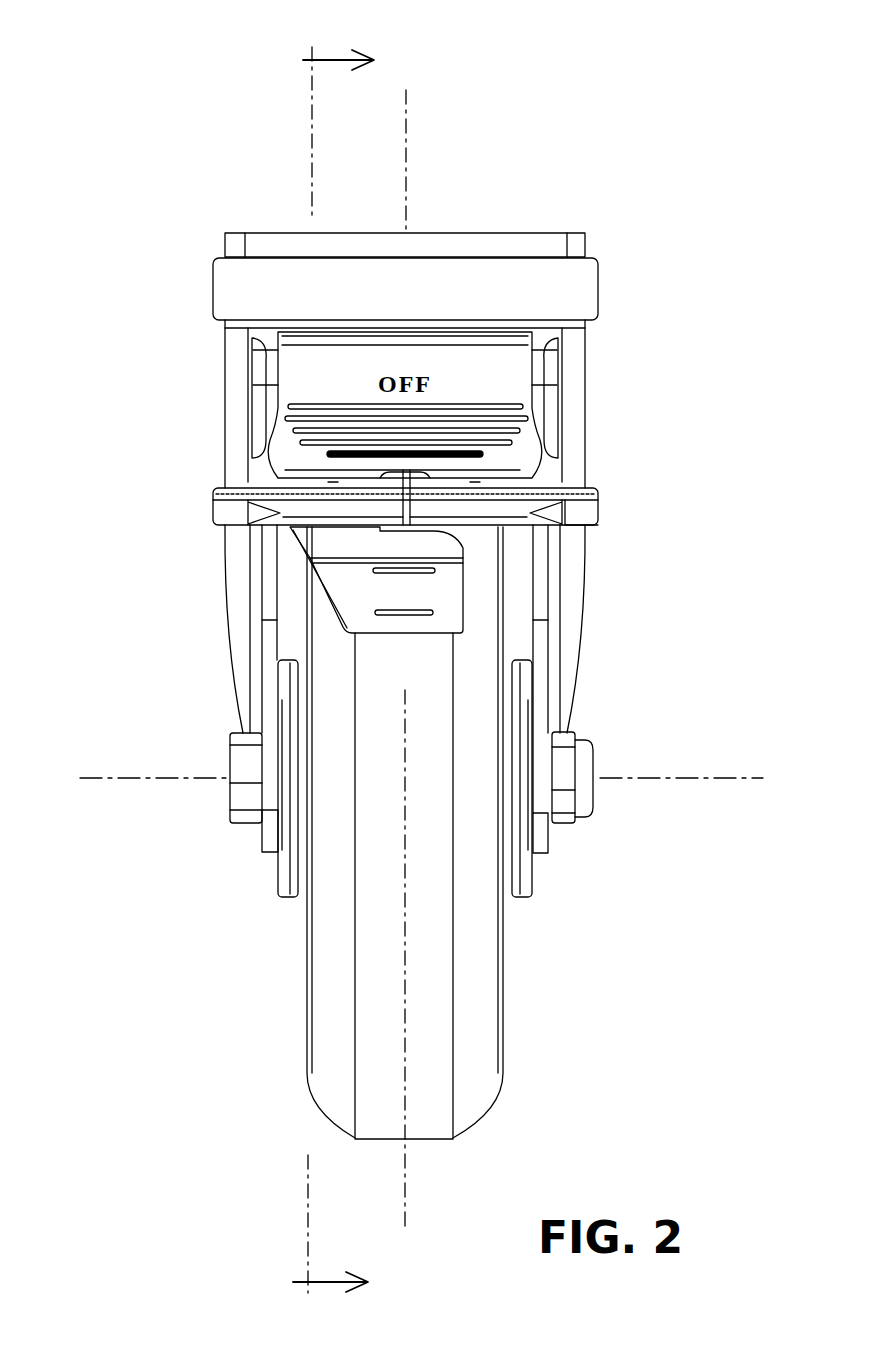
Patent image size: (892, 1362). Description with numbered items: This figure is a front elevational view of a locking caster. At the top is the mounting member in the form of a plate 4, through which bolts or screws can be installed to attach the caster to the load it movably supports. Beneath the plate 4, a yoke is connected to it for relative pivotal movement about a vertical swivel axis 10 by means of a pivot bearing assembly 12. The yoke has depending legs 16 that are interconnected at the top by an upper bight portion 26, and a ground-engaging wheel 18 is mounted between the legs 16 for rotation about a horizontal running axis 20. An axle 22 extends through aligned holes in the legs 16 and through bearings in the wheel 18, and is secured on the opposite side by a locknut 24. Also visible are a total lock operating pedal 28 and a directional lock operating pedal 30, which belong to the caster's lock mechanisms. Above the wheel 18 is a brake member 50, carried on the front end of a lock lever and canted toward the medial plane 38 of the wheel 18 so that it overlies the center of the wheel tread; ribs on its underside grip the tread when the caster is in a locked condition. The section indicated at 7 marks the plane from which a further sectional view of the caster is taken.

The plate 4 is at (582, 246).
The section line 7- 7 is at (335, 675).
The swivel axis 10 is at (406, 113).
The pivot bearing assembly 12 is at (583, 298).
The legs 16 is at (233, 648).
The wheel 18 is at (493, 1107).
The running axis 20 is at (728, 778).
The axle 22 is at (241, 809).
The locknut 24 is at (587, 747).
The upper bight portion 26 is at (230, 322).
The total lock operating pedal 28 is at (215, 513).
The directional lock operating pedal 30 is at (595, 512).
The medial plane 38 is at (405, 1210).
The brake member 50 is at (433, 633).